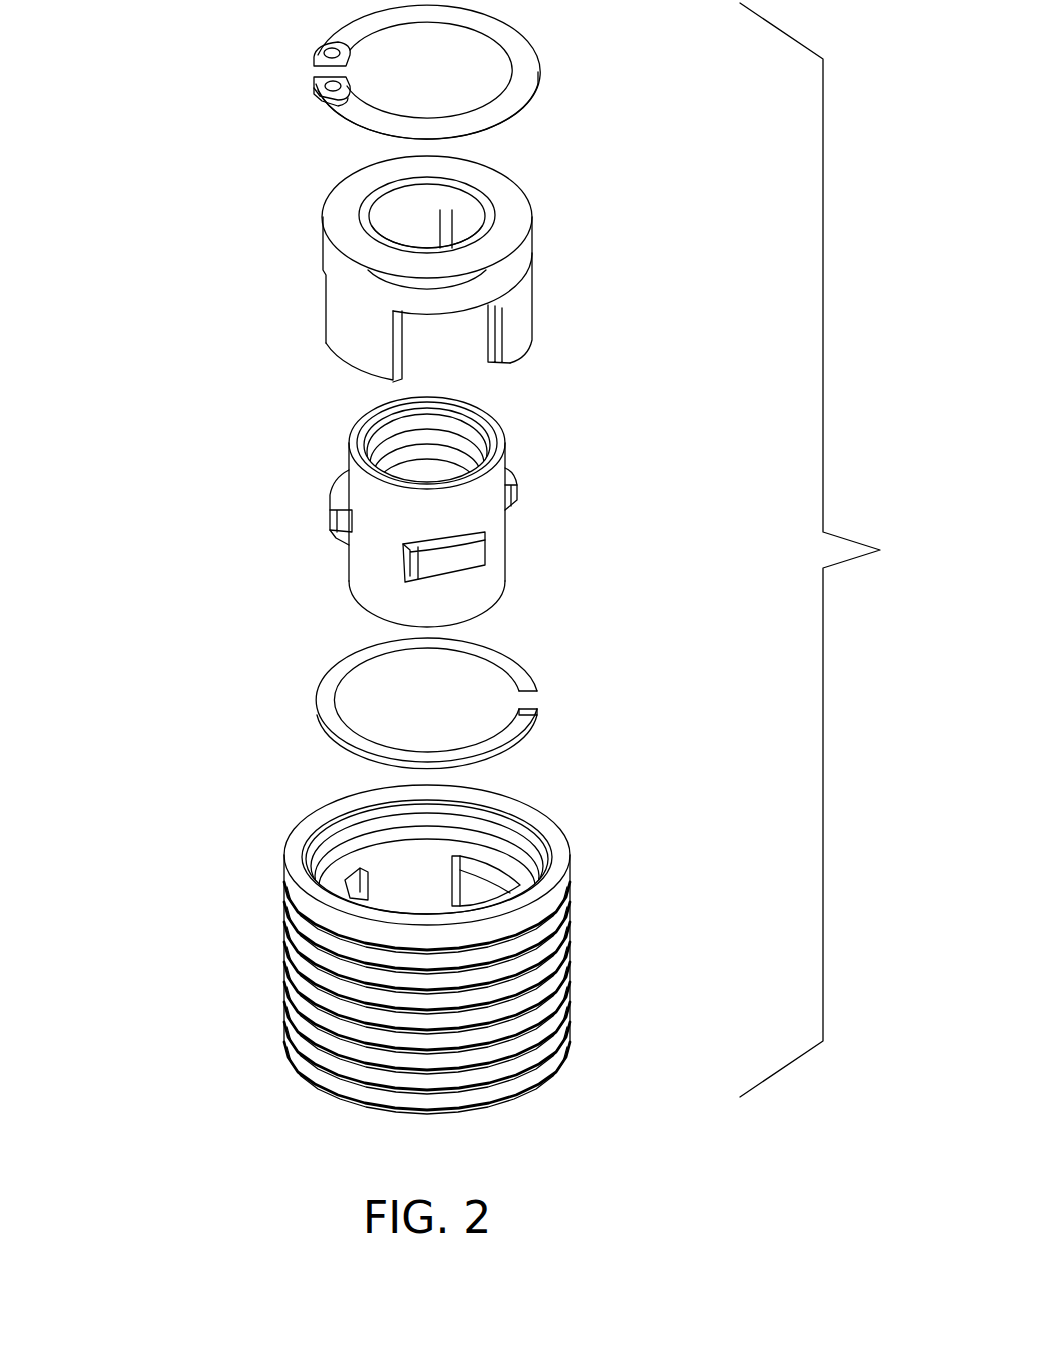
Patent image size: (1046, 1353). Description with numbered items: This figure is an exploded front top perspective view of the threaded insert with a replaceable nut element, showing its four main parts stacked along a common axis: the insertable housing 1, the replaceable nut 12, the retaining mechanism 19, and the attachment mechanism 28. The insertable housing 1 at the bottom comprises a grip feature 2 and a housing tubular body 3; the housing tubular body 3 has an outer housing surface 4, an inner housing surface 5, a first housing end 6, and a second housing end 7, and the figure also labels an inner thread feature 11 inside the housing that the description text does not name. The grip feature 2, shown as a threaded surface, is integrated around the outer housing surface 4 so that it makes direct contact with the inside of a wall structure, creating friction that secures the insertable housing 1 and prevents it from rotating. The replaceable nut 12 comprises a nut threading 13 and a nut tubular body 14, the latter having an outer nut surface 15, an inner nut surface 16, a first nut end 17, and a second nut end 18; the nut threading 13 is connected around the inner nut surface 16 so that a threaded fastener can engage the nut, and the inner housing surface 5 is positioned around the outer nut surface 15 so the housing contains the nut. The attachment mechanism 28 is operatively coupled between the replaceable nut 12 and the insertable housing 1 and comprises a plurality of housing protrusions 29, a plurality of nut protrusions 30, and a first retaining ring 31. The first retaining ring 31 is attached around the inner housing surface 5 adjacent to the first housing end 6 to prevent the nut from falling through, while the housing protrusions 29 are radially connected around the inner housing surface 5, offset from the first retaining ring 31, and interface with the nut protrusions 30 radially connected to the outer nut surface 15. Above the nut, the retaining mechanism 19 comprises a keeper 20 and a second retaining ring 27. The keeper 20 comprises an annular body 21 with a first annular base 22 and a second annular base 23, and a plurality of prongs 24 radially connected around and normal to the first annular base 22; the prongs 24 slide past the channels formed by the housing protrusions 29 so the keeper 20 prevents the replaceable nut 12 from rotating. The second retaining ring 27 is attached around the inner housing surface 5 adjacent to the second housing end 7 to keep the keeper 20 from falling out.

The insertable housing 1 is at (360, 958).
The grip feature 2 is at (369, 974).
The housing tubular body 3 is at (394, 958).
The outer housing surface 4 is at (320, 1013).
The inner housing surface 5 is at (515, 858).
The first housing end 6 is at (422, 1120).
The second housing end 7 is at (368, 798).
The internal thread of insert 11 is at (473, 812).
The replaceable nut 12 is at (364, 521).
The nut threading 13 is at (467, 450).
The nut tubular body 14 is at (362, 528).
The outer nut surface 15 is at (355, 568).
The inner nut surface 16 is at (473, 435).
The first nut end 17 is at (474, 627).
The second nut end 18 is at (370, 431).
The retaining mechanism 19 is at (322, 193).
The keeper 20 is at (322, 269).
The annular body 21 is at (323, 258).
The first annular base 22 is at (430, 212).
The second annular base 23 is at (420, 269).
The plurality of prongs 24 is at (518, 334).
The second retaining ring 27 is at (333, 101).
The attachment mechanism 28 is at (364, 777).
The plurality of housing protrusions 29 is at (455, 878).
The plurality of nut protrusions 30 is at (330, 515).
The first retaining ring 31 is at (325, 697).